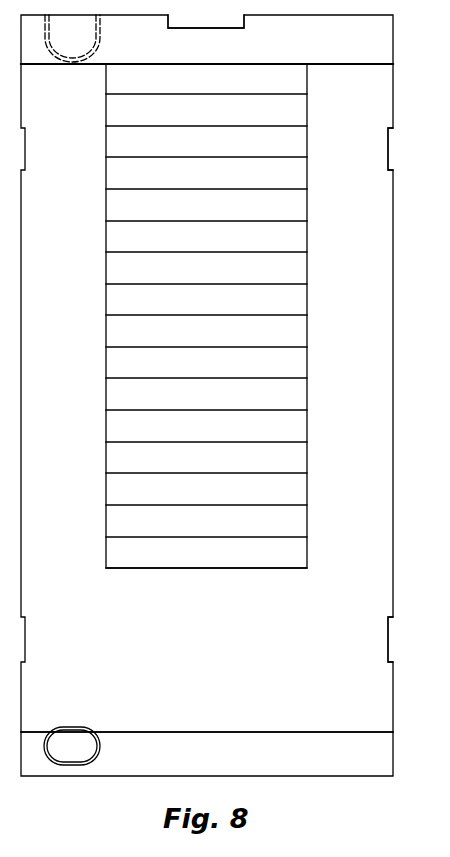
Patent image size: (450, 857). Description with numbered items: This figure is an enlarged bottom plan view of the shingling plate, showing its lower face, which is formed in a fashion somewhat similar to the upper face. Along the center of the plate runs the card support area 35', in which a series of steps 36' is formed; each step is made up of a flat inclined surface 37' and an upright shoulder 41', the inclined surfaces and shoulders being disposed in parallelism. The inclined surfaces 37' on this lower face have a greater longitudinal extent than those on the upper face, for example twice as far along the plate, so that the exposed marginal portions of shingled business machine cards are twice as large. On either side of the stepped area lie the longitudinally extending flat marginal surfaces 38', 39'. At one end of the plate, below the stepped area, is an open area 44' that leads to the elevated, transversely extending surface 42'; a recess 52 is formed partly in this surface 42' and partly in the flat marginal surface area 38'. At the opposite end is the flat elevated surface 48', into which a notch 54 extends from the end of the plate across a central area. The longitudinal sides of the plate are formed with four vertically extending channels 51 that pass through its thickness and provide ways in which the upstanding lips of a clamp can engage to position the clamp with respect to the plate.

The flat elevated surface 48' is at (207, 39).
The notch 54 is at (238, 26).
The flat longitudinally extending marginal surface area 38' is at (63, 398).
The right side rail 39' is at (350, 398).
The vertically extending channels 51 is at (388, 143).
The lower blank area 44' is at (207, 650).
The elevated transversely extending surface 42' is at (207, 754).
The recess 52 is at (70, 741).
The slatted panel 35' is at (206, 316).
The steps 36' is at (233, 259).
The inclined surfaces 37' is at (235, 386).
The lower slats 41' is at (235, 473).